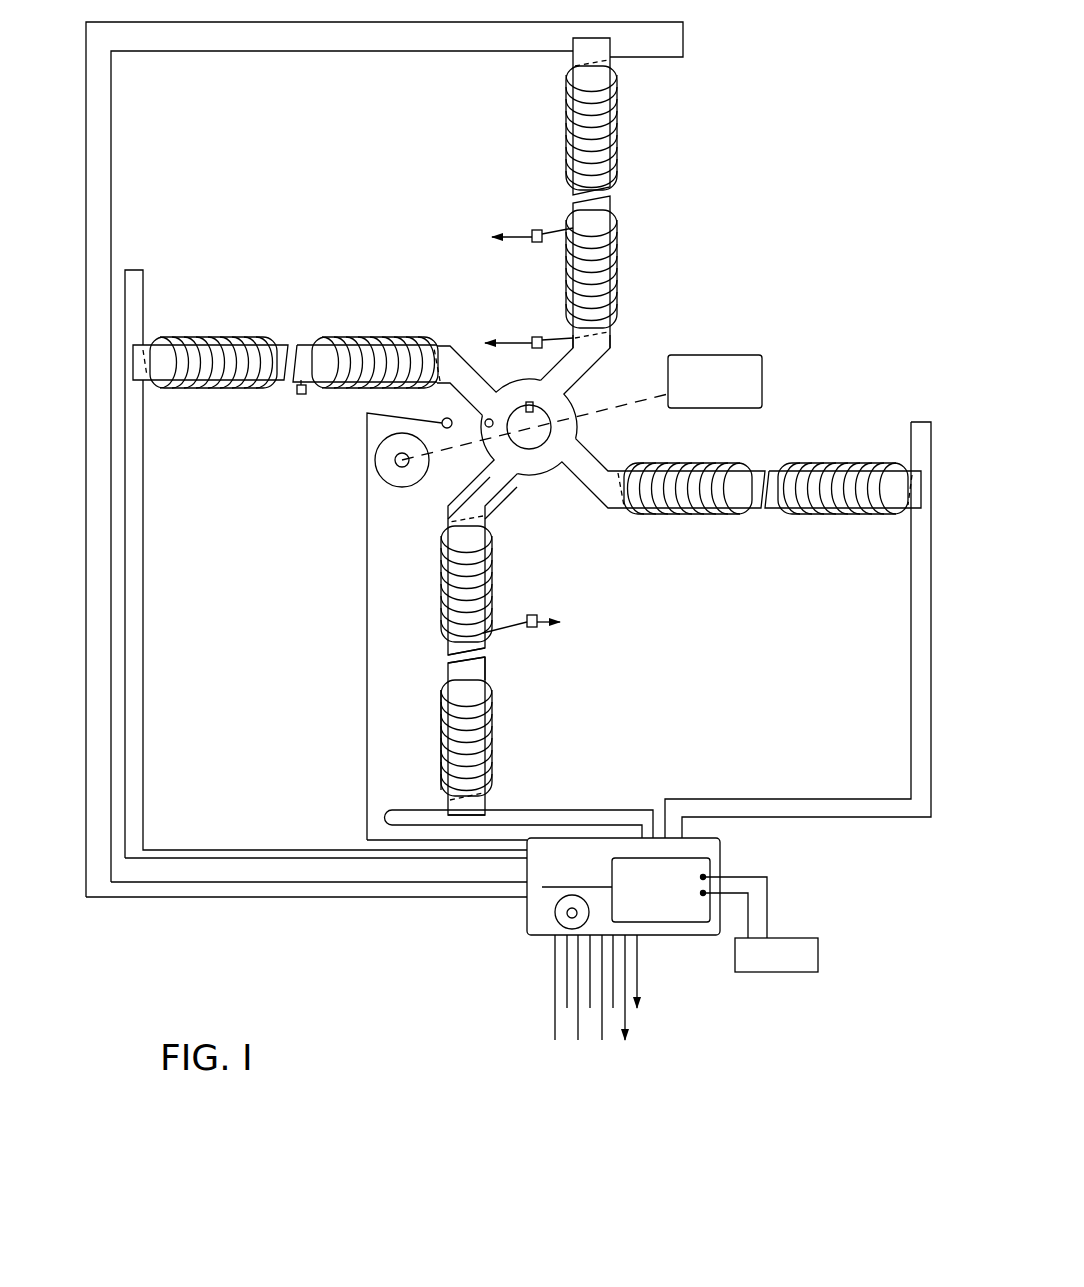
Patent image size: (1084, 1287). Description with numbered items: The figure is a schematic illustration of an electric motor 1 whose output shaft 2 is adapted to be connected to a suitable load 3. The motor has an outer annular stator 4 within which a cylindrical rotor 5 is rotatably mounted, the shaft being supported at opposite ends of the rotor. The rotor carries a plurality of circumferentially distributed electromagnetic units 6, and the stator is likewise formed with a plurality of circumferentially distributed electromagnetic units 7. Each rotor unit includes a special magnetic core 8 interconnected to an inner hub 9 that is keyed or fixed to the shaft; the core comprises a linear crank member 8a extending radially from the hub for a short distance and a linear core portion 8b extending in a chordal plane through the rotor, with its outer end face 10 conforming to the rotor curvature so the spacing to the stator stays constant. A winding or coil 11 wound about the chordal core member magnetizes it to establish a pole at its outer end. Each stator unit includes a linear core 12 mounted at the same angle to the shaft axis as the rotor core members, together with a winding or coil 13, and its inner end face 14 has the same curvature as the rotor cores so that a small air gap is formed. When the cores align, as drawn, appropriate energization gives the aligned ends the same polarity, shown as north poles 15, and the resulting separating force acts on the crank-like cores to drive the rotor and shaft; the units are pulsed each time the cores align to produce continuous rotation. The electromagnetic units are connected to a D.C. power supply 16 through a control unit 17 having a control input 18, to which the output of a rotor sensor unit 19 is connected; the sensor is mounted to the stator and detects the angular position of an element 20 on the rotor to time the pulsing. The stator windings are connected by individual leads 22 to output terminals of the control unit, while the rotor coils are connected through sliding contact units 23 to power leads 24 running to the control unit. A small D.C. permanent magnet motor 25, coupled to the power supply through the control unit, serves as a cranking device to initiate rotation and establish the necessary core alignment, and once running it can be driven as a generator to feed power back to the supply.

The electric motor 1 is at (826, 98).
The output shaft 2 is at (551, 427).
The load 3 is at (763, 360).
The outer annular stator 4 is at (553, 107).
The cylindrical rotor 5 is at (558, 218).
The rotor electromagnetic unit 6 is at (622, 267).
The stator electromagnetic unit 7 is at (624, 136).
The magnetic core 8 is at (620, 334).
The linear crank member 8a is at (480, 478).
The linear core portion 8b is at (458, 533).
The inner hub 9 is at (575, 402).
The outer end face 10 is at (450, 663).
The rotor winding or coil 11 is at (617, 297).
The linear stator core 12 is at (473, 772).
The stator winding or coil 13 is at (440, 698).
The inner end face 14 is at (482, 673).
The north poles 15 is at (447, 637).
The D.C. power supply 16 is at (818, 955).
The control unit 17 is at (533, 915).
The control input 18 is at (530, 842).
The rotor sensor unit 19 is at (444, 418).
The rotor element 20 is at (300, 395).
The leads 22 is at (928, 711).
The sliding contact units 23 is at (532, 242).
The power leads 24 is at (534, 230).
The D.C. permanent magnet motor 25 is at (383, 477).